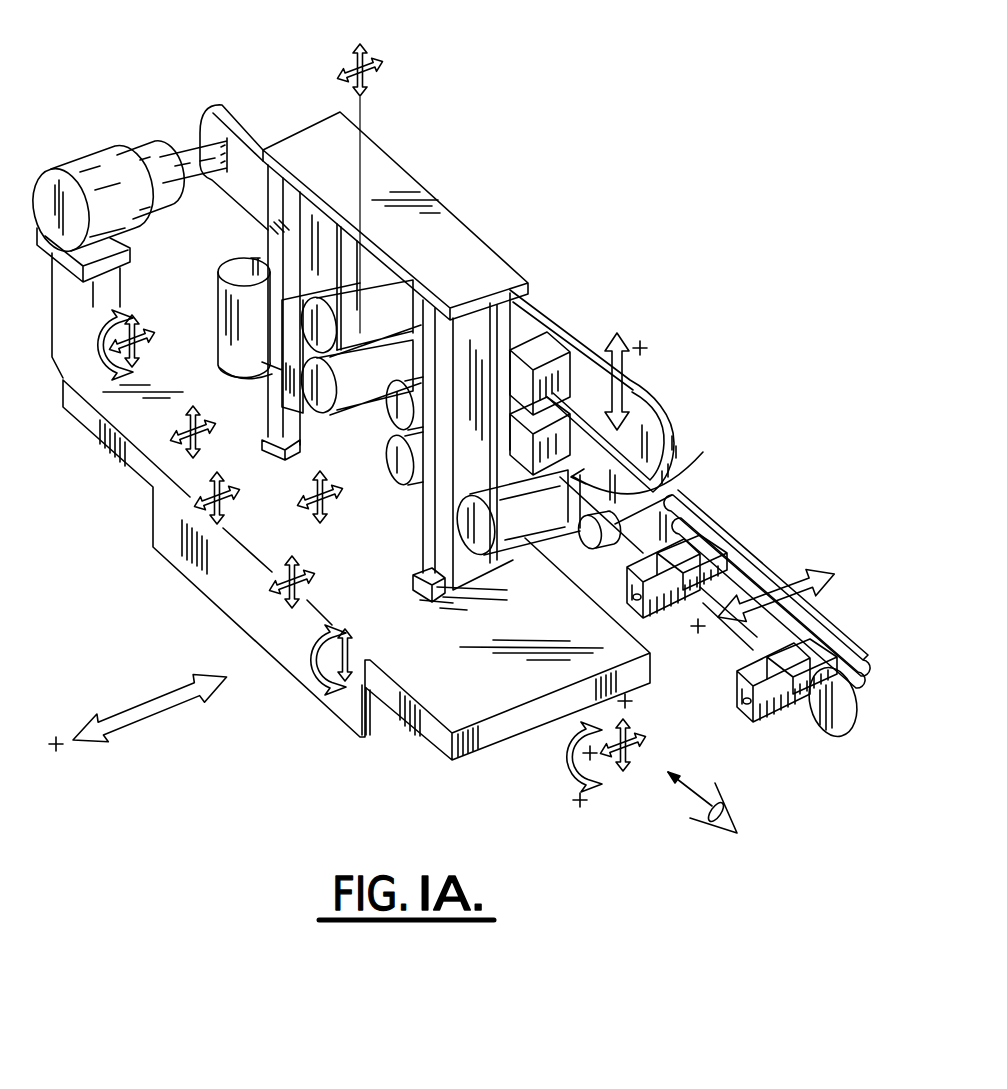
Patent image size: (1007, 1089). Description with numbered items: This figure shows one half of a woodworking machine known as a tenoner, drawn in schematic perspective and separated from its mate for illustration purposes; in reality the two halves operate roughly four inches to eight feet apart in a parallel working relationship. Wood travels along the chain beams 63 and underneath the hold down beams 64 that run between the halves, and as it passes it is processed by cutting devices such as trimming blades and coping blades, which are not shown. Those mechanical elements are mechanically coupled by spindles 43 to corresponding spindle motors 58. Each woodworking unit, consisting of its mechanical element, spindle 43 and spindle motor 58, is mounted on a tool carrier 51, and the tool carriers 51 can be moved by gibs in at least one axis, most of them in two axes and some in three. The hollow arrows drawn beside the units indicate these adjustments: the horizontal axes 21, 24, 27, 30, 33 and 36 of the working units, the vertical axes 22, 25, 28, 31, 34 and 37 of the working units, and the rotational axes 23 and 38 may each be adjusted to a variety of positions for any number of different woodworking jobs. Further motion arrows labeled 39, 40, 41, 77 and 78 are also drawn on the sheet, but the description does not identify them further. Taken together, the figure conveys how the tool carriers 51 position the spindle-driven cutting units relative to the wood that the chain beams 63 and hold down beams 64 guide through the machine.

The horizontal axis 21 is at (356, 570).
The vertical axis 22 is at (352, 637).
The rotational axis 23 is at (313, 659).
The horizontal axis 24 is at (408, 463).
The vertical axis 25 is at (393, 407).
The horizontal axis 27 is at (309, 575).
The vertical axis 28 is at (296, 565).
The horizontal axis 30 is at (212, 424).
The vertical axis 31 is at (262, 362).
The horizontal axis 33 is at (233, 497).
The vertical axis 34 is at (275, 432).
The horizontal axis 36 is at (217, 337).
The vertical axis 37 is at (135, 325).
The rotational axis 38 is at (96, 345).
The vertical axis of belt 39 is at (626, 366).
The carriage rails 40 is at (748, 606).
The horizontal translation axis 41 is at (140, 708).
The spindles 43 is at (643, 523).
The tool carriers 51 is at (470, 537).
The spindle motors 58 is at (268, 374).
The chain beams 63 is at (823, 717).
The hold down beams 64 is at (703, 408).
The horizontal axis of top plate 77 is at (375, 62).
The vertical axis of top plate 78 is at (369, 169).